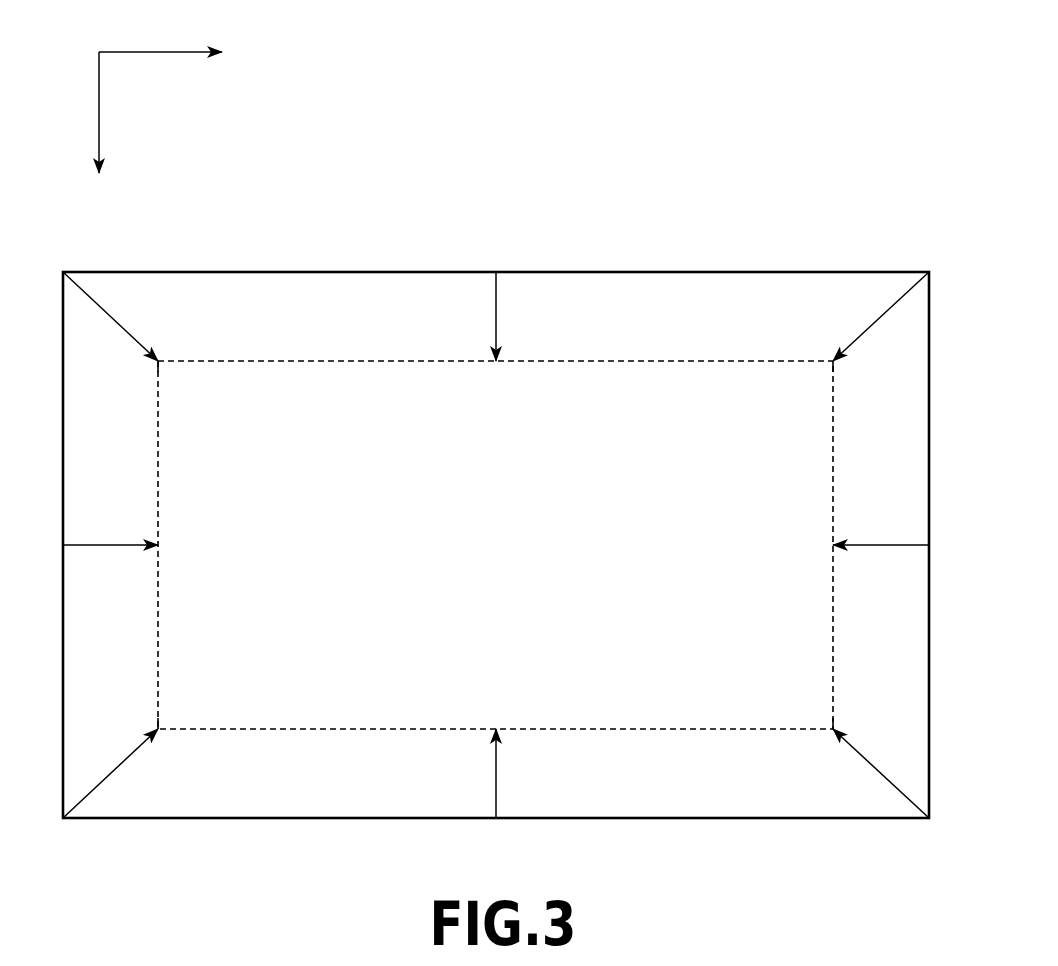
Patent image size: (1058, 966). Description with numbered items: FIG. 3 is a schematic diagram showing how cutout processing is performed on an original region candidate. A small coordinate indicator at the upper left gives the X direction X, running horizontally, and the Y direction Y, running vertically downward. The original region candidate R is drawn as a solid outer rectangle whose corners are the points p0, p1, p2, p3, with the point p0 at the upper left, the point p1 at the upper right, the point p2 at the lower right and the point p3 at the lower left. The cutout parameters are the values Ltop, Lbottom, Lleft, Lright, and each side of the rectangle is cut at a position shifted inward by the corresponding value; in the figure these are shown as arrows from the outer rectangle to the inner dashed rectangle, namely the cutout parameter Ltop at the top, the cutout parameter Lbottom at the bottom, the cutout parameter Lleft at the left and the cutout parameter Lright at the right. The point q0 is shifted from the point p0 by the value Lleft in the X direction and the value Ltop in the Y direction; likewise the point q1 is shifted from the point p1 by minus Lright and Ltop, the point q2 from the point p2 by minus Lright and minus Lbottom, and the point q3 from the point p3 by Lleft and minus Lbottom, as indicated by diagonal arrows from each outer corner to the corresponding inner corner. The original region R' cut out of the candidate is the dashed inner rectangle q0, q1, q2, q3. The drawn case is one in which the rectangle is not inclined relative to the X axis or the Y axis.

The X direction X is at (160, 31).
The Y direction Y is at (84, 112).
The original region candidate R is at (496, 526).
The original region R' is at (495, 545).
The point p0 is at (101, 300).
The point p1 is at (893, 299).
The point p2 is at (894, 793).
The point p3 is at (101, 793).
The point q0 is at (174, 379).
The point q1 is at (816, 381).
The point q2 is at (816, 712).
The point q3 is at (174, 712).
The cutout parameter Ltop is at (522, 316).
The cutout parameter Lbottom is at (537, 773).
The cutout parameter Lleft is at (110, 527).
The cutout parameter Lright is at (881, 527).